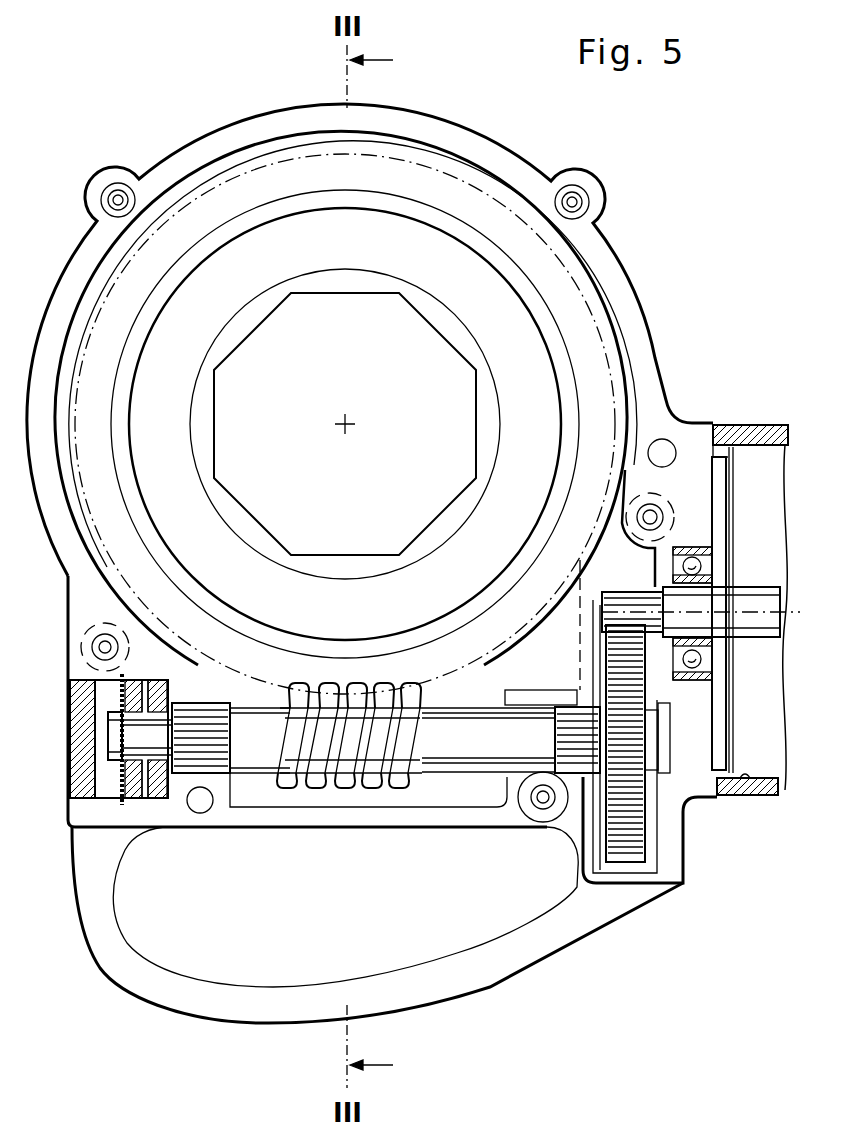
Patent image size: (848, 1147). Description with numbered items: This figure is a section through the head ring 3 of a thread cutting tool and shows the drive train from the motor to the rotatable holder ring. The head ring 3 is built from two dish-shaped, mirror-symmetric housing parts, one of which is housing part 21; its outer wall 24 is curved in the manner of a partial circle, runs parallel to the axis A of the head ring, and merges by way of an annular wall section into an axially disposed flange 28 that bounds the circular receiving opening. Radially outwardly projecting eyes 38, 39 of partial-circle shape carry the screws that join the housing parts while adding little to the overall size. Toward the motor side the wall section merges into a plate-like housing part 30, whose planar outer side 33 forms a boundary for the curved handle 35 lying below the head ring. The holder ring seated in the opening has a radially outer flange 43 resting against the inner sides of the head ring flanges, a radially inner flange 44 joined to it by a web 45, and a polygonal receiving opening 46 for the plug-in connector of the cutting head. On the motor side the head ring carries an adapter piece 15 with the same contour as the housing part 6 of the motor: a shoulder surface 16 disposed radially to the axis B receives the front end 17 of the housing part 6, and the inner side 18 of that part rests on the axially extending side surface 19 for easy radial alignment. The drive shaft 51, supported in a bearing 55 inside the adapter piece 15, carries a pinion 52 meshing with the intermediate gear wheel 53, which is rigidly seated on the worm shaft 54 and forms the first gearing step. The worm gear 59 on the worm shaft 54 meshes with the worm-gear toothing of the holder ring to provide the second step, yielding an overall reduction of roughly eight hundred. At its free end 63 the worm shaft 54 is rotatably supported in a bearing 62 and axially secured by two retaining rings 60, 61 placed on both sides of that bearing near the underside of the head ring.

The head ring 3 is at (633, 280).
The housing part 6 is at (762, 737).
The adapter piece 15 is at (697, 435).
The shoulder surface 16 is at (725, 430).
The front end 17 is at (730, 787).
The inner side 18 is at (747, 773).
The side surface 19 is at (733, 453).
The housing part 21 is at (511, 152).
The outer wall 24 is at (447, 133).
The flange 28 is at (595, 340).
The plate-like housing part 30 is at (543, 643).
The outer side 33 is at (421, 812).
The handle 35 is at (487, 990).
The eye 38 is at (578, 218).
The eye 39 is at (126, 185).
The flange 43 is at (472, 212).
The flange 44 is at (314, 280).
The web 45 is at (332, 215).
The polygonal receiving opening 46 is at (430, 343).
The drive shaft 51 is at (743, 628).
The pinion 52 is at (628, 596).
The intermediate gear wheel 53 is at (683, 878).
The worm shaft 54 is at (485, 758).
The bearing 55 is at (703, 687).
The worm gear 59 is at (332, 790).
The retaining ring 60 is at (122, 762).
The retaining ring 61 is at (165, 767).
The bearing 62 is at (128, 775).
The free end 63 is at (172, 692).
The axis A is at (343, 421).
The axis B is at (757, 605).